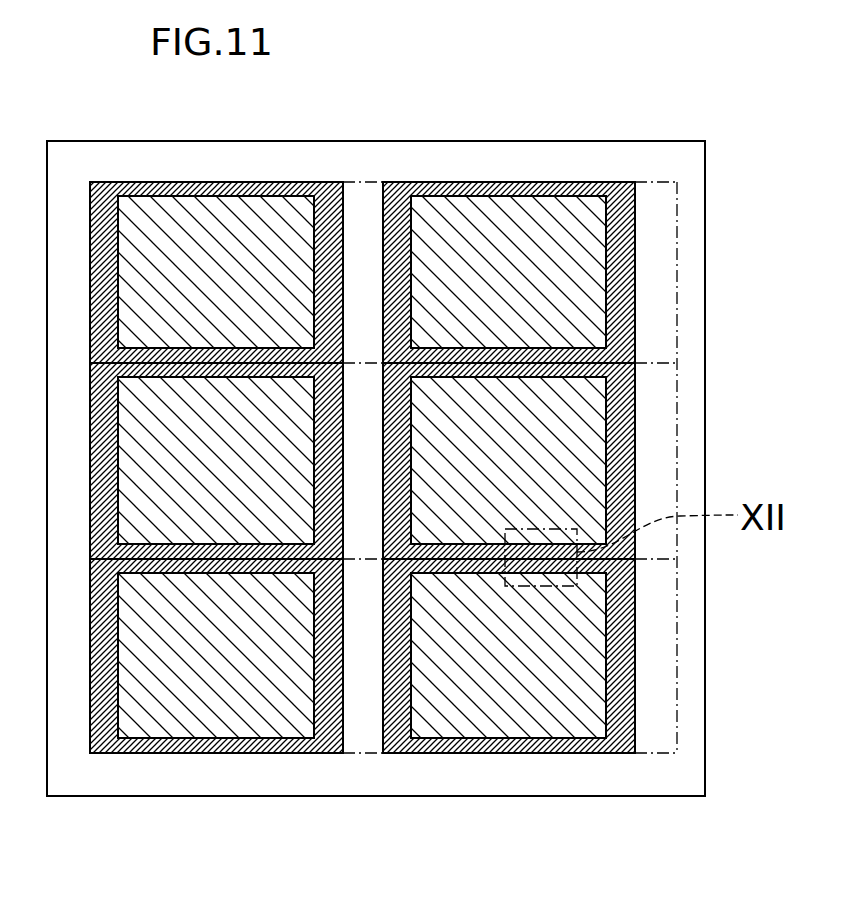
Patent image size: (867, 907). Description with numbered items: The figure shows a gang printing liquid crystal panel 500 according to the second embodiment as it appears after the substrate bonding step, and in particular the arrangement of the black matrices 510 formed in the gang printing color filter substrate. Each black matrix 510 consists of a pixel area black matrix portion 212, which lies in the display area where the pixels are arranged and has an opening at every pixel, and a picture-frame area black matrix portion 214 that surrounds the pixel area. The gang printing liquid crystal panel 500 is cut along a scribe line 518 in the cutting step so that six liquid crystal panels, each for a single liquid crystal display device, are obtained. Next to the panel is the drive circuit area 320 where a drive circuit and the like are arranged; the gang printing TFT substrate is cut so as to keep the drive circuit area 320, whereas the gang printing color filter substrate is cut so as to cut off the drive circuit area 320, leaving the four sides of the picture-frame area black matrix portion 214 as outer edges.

The gang printing liquid crystal panel 500 is at (638, 87).
The black matrix 510 is at (362, 455).
The pixel area black matrix portion 212 is at (482, 727).
The picture-frame area black matrix portion 214 is at (578, 745).
The drive circuit area 320 is at (658, 692).
The scribe line 518 is at (653, 755).